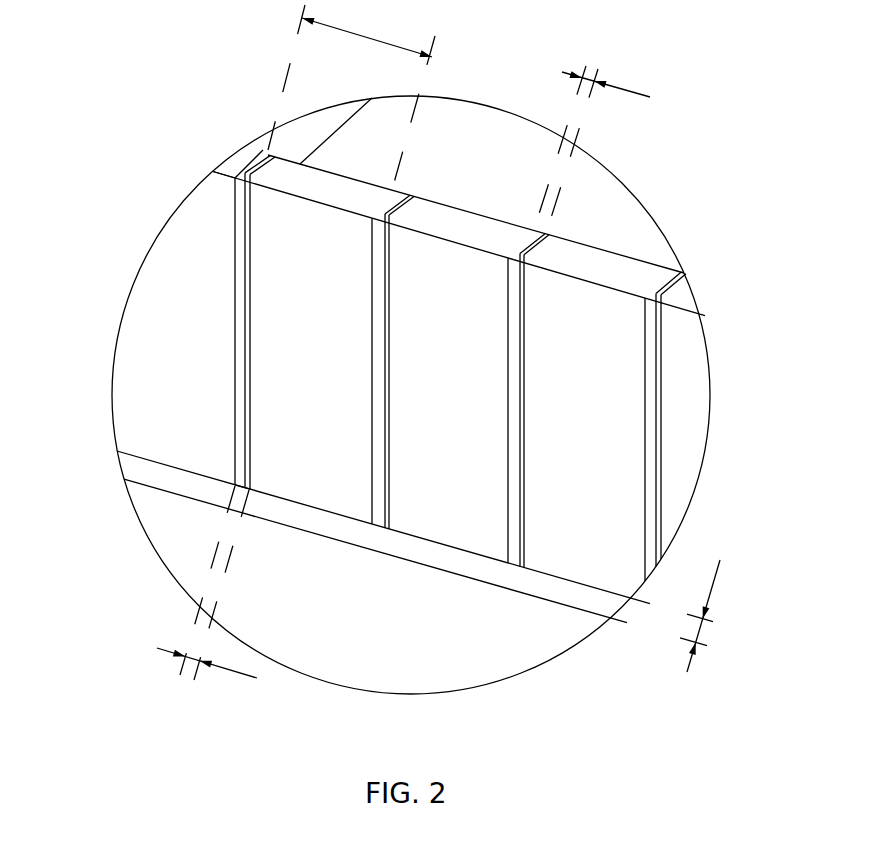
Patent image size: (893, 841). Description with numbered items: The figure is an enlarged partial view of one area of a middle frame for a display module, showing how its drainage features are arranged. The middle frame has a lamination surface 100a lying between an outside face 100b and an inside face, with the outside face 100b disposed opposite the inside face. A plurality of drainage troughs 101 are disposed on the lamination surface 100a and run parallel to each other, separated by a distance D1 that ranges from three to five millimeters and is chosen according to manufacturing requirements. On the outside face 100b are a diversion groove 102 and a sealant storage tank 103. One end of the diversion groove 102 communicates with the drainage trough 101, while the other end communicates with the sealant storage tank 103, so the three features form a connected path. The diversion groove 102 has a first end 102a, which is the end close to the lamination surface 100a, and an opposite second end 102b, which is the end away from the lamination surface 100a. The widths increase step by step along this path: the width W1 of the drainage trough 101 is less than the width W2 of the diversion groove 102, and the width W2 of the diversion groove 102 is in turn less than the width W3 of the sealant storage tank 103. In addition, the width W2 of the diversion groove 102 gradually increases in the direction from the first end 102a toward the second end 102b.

The lamination surface 100a is at (623, 268).
The outside face 100b is at (144, 333).
The drainage trough 101 is at (688, 273).
The diversion groove 102 is at (660, 458).
The first end 102a is at (246, 178).
The second end 102b is at (247, 490).
The sealant storage tank 103 is at (137, 468).
The distance between two drainage troughs D1 is at (351, 97).
The width of the drainage trough W1 is at (592, 153).
The width of the diversion groove W2 is at (207, 583).
The width of the sealant storage tank W3 is at (700, 616).